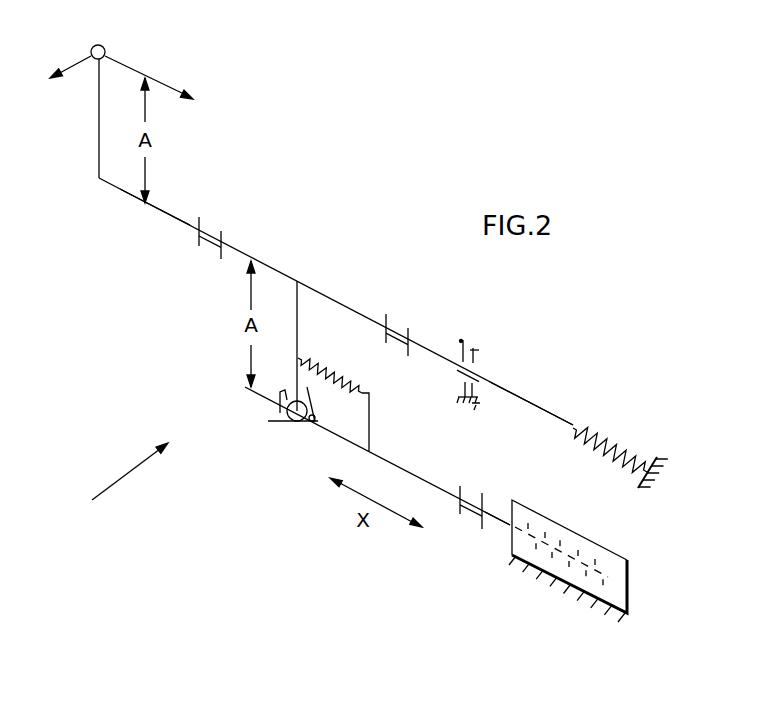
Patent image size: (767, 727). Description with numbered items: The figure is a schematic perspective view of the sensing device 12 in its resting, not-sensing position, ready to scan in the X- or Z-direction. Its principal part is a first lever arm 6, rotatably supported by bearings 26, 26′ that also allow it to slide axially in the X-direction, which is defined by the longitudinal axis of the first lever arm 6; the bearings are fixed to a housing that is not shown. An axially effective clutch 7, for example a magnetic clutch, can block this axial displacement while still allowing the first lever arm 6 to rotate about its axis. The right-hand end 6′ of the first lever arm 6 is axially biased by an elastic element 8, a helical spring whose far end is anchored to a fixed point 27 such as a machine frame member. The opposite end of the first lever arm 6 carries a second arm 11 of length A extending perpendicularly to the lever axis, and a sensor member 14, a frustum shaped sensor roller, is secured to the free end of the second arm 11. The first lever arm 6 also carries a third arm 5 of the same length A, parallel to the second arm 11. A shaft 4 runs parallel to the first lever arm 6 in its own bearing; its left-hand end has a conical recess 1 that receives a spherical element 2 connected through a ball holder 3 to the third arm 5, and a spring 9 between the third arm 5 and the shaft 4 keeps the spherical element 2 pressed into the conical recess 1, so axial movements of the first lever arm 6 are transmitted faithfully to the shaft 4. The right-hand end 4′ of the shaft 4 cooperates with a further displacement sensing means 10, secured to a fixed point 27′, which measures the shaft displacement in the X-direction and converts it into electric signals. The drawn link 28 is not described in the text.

The conical recess 1 is at (283, 424).
The spherical element 2 is at (305, 418).
The ball holder 3 is at (287, 400).
The shaft 4 is at (407, 468).
The right-hand end of the shaft 4′ is at (497, 515).
The third arm 5 is at (298, 322).
The first lever arm 6 is at (428, 352).
The right-hand end of the first lever arm 6′ is at (528, 403).
The axially effective clutch 7 is at (480, 362).
The elastic element 8 is at (622, 446).
The spring 9 is at (340, 376).
The further displacement sensing means 10 is at (605, 562).
The second arm 11 is at (99, 132).
The sensing device 12 is at (114, 479).
The sensor member 14 is at (103, 47).
The bearing 26 is at (212, 222).
The bearing 26′ is at (397, 318).
The fixed point 27 is at (667, 471).
The fixed point 27′ is at (553, 583).
The link rod 28 is at (372, 427).